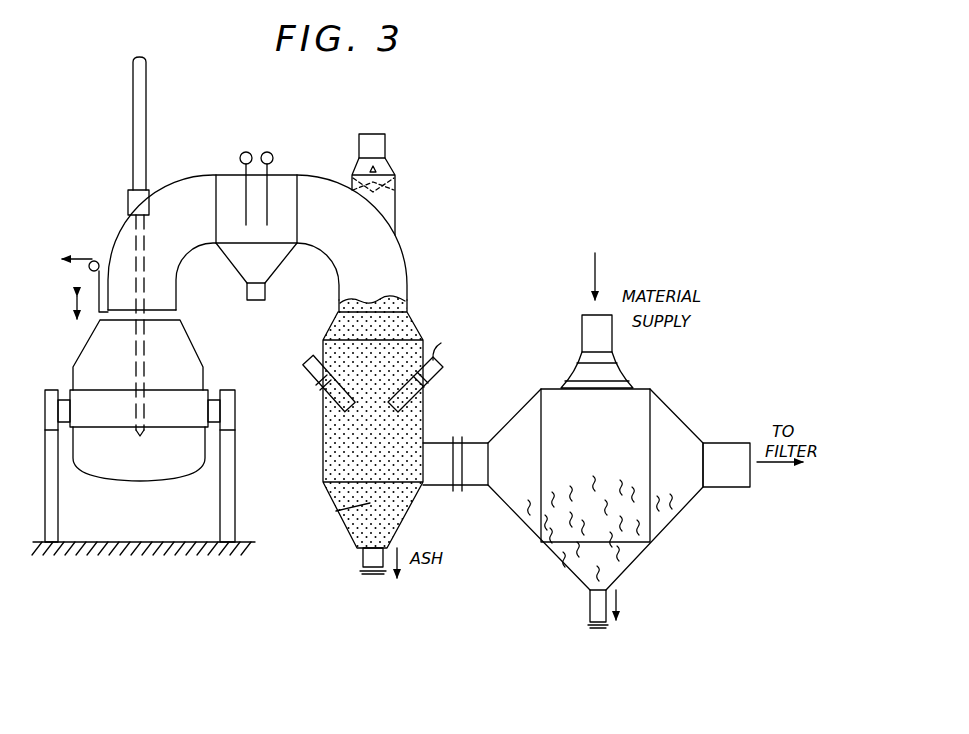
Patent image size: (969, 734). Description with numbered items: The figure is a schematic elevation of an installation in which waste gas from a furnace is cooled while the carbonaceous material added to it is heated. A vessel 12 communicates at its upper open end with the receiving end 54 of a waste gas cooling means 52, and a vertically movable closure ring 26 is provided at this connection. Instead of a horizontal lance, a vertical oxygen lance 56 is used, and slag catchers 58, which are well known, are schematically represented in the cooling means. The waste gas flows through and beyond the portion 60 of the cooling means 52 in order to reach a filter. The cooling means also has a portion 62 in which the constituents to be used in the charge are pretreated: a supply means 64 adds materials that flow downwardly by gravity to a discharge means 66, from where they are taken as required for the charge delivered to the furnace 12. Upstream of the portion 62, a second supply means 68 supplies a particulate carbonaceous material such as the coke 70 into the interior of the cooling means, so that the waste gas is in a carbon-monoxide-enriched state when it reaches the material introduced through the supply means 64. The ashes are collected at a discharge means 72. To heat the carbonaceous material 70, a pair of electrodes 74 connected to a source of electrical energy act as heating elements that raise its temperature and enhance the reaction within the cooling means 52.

The vessel 12 is at (165, 465).
The vertically movable closure ring 26 is at (181, 300).
The waste gas cooling means 52 is at (304, 163).
The receiving end 54 is at (160, 310).
The vertical oxygen lance 56 is at (147, 97).
The slag catchers 58 is at (243, 169).
The portion 60 is at (737, 478).
The portion 62 is at (607, 430).
The supply means 64 is at (634, 366).
The discharge means 66 is at (581, 589).
The second supply means 68 is at (399, 152).
The coke 70 is at (332, 446).
The discharge means 72 is at (353, 551).
The electrodes 74 is at (330, 398).